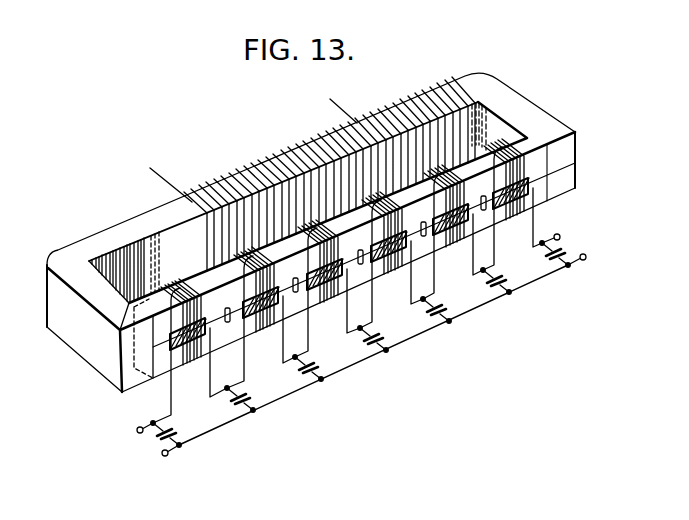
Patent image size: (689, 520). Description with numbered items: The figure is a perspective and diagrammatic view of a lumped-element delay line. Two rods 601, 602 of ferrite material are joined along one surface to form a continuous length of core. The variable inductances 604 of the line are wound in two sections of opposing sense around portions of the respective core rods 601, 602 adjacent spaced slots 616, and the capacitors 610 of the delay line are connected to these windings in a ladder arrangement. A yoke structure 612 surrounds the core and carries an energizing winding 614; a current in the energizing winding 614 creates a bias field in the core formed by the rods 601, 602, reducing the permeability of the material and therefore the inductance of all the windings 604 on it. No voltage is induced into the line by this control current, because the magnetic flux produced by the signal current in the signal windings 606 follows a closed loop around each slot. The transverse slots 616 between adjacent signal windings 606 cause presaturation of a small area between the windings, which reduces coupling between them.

The ferrite rod 601 is at (163, 367).
The ferrite rod 602 is at (131, 308).
The variable inductances 604 is at (176, 282).
The signal windings 606 is at (244, 303).
The capacitors 610 is at (232, 410).
The yoke structure 612 is at (118, 226).
The energizing winding 614 is at (247, 170).
The transverse slots 616 is at (424, 236).